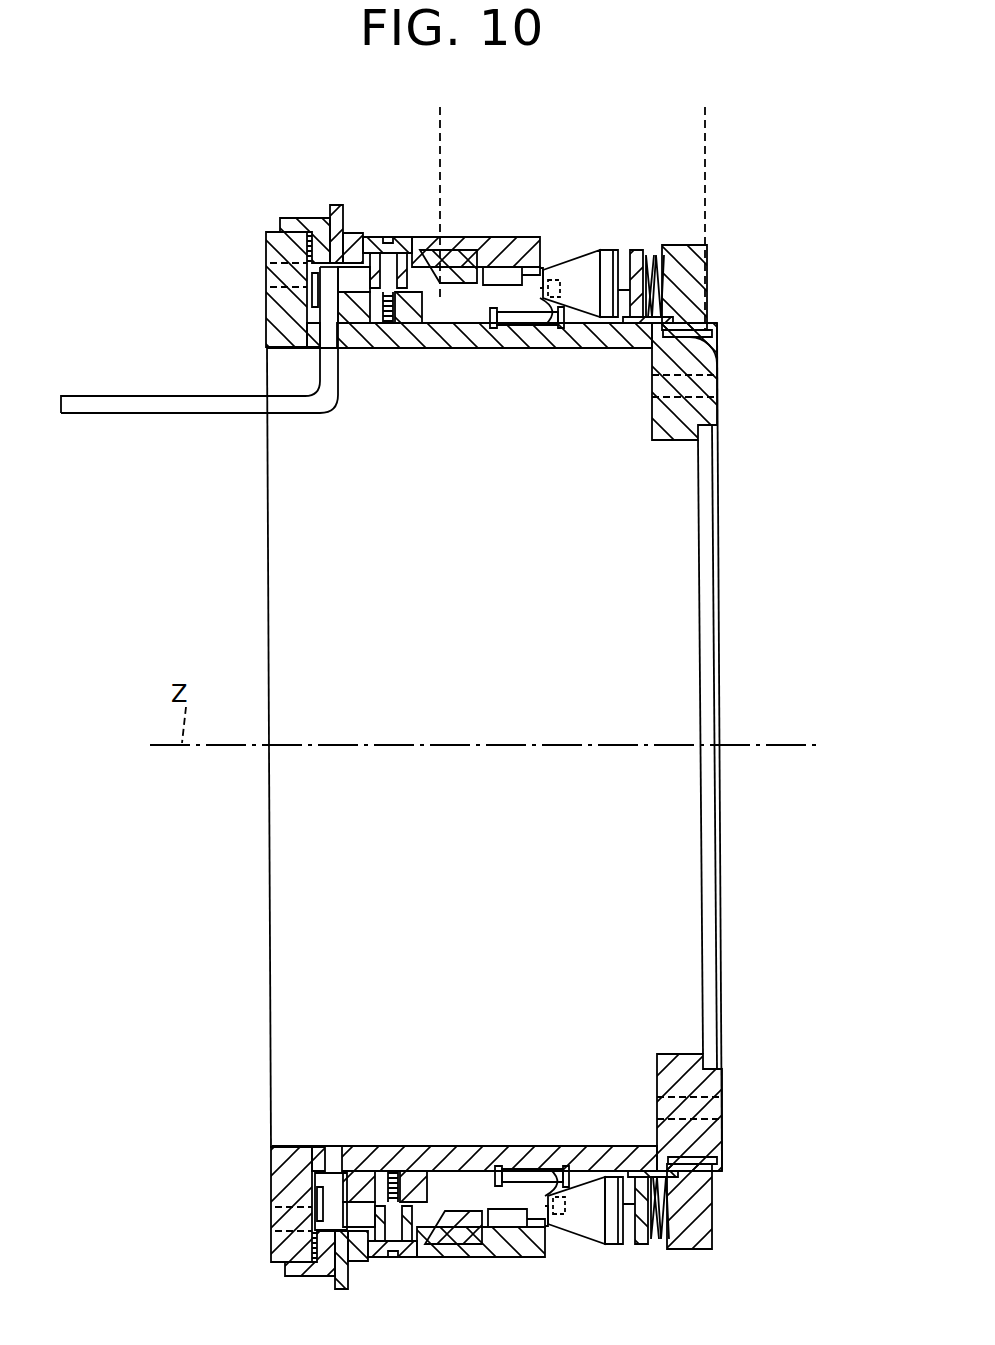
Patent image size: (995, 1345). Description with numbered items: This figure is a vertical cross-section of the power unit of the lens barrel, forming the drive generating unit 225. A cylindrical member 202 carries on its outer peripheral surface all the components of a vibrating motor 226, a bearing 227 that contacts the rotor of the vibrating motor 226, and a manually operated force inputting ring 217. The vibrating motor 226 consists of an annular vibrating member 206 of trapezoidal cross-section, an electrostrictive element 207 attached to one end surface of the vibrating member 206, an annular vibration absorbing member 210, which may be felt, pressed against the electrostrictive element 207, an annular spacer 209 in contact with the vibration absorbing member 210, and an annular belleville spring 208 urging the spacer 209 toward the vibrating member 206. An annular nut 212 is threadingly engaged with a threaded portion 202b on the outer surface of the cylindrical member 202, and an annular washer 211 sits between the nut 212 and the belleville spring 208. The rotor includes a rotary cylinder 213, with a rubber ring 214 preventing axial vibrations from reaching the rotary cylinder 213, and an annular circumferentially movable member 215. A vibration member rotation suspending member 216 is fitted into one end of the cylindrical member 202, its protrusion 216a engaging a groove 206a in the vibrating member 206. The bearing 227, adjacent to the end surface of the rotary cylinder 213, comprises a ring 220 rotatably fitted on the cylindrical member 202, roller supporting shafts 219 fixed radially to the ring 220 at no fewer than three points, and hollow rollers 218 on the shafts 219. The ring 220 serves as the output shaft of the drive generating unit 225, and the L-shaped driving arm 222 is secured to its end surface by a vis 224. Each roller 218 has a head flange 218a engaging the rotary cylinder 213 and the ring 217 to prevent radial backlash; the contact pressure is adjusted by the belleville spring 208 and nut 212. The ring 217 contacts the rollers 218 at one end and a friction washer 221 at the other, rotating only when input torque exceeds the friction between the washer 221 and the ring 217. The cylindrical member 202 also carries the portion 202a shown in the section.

The cylindrical member 202 is at (478, 330).
The left flange of body 202a is at (300, 288).
The threaded portion 202b is at (708, 362).
The vibrating member 206 is at (590, 262).
The groove 206a is at (575, 285).
The electrostrictive element 207 is at (615, 270).
The belleville spring 208 is at (645, 252).
The spacer 209 is at (640, 255).
The vibration absorbing member 210 is at (630, 320).
The washer 211 is at (660, 240).
The nut 212 is at (705, 270).
The rotary cylinder 213 is at (445, 240).
The rubber ring 214 is at (472, 240).
The circumferentially movable member 215 is at (522, 262).
The vibration member rotation suspending member 216 is at (505, 314).
The protrusion 216a is at (545, 312).
The manually operated force inputting ring 217 is at (338, 205).
The roller 218 is at (440, 295).
The head flange 218a is at (352, 235).
The roller supporting shaft 219 is at (405, 236).
The ring 220 is at (357, 295).
The friction washer 221 is at (298, 245).
The driving arm 222 is at (123, 416).
The vis 224 is at (315, 308).
The drive generating unit 225 is at (765, 293).
The vibrating motor 226 is at (705, 114).
The bearing 227 is at (391, 233).